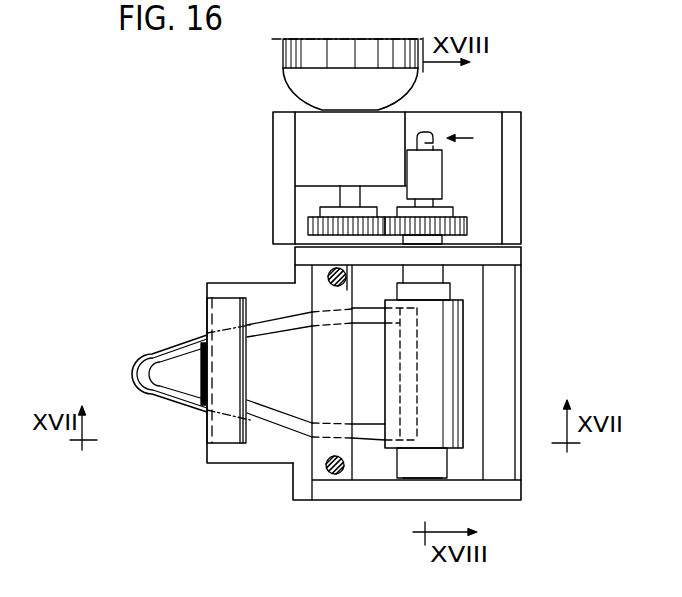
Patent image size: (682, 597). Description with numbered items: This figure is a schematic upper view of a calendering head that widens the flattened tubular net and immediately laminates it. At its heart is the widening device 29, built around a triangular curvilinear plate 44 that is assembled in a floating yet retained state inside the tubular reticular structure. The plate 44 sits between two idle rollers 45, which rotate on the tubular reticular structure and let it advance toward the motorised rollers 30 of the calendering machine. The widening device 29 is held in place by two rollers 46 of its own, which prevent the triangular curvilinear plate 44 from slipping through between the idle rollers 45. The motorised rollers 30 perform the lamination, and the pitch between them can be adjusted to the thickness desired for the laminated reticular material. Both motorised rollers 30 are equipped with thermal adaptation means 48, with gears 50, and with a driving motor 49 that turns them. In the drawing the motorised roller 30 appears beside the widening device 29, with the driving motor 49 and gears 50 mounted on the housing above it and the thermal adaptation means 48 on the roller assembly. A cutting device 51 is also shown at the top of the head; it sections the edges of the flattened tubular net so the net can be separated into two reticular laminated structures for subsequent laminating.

The widening device 29 is at (182, 412).
The motorised roller 30 is at (432, 345).
The triangular curvilinear plate 44 is at (280, 383).
The idle roller 45 is at (225, 313).
The roller 46 is at (202, 360).
The thermal adaptation means 48 is at (327, 268).
The driving motor 49 is at (433, 172).
The gears 50 is at (467, 224).
The cutting device 51 is at (366, 55).